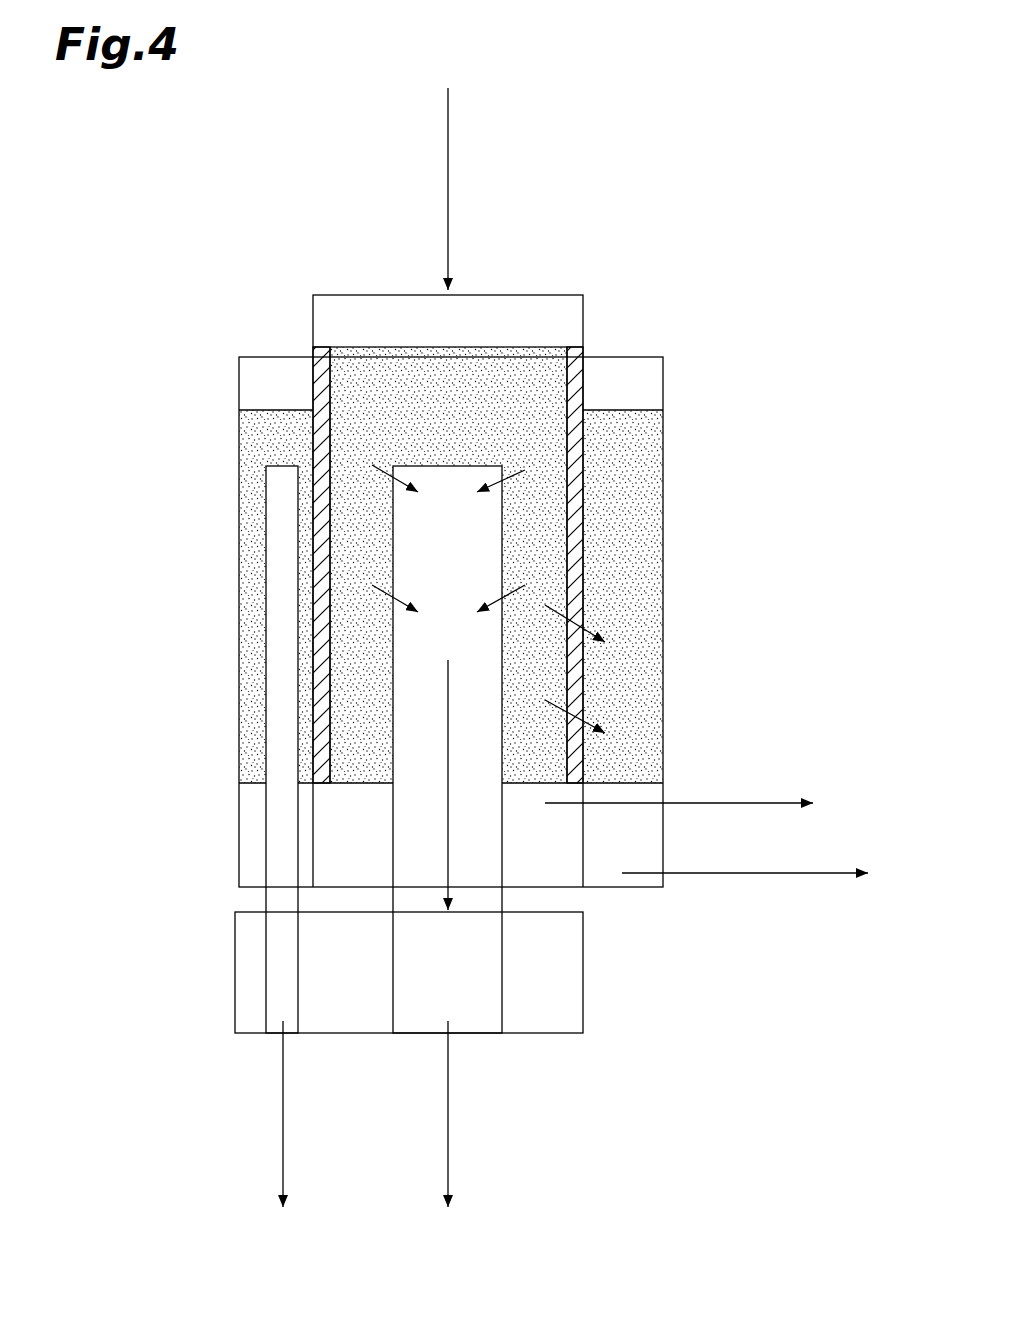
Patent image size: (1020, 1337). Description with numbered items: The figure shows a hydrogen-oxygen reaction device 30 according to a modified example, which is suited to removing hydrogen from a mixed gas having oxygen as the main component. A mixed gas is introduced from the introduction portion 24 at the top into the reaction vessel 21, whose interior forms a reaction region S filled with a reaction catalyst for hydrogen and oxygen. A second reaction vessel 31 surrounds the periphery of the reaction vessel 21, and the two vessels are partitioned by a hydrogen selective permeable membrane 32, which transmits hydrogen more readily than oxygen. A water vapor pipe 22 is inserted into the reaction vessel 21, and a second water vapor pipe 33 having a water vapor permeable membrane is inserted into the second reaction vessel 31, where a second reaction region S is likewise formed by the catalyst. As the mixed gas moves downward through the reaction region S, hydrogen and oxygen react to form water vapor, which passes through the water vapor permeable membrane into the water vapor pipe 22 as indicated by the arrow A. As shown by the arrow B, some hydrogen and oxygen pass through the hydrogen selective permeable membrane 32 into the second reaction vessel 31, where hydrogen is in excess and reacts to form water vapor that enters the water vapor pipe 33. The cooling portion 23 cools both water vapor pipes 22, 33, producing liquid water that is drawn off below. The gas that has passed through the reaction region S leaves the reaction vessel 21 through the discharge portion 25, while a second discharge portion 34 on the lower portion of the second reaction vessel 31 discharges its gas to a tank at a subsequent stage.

The reaction vessel 21 is at (583, 318).
The water vapor pipe 22 is at (505, 554).
The cooling portion 23 is at (583, 995).
The introduction portion 24 is at (450, 228).
The discharge portion 25 is at (693, 806).
The hydrogen-oxygen reaction device 30 is at (753, 178).
The second reaction vessel 31 is at (663, 378).
The hydrogen selective permeable membrane 32 is at (570, 436).
The water vapor pipe 33 is at (265, 517).
The discharge portion 34 is at (732, 876).
The arrow A is at (523, 463).
The reaction region S is at (547, 658).
The arrow B is at (590, 713).